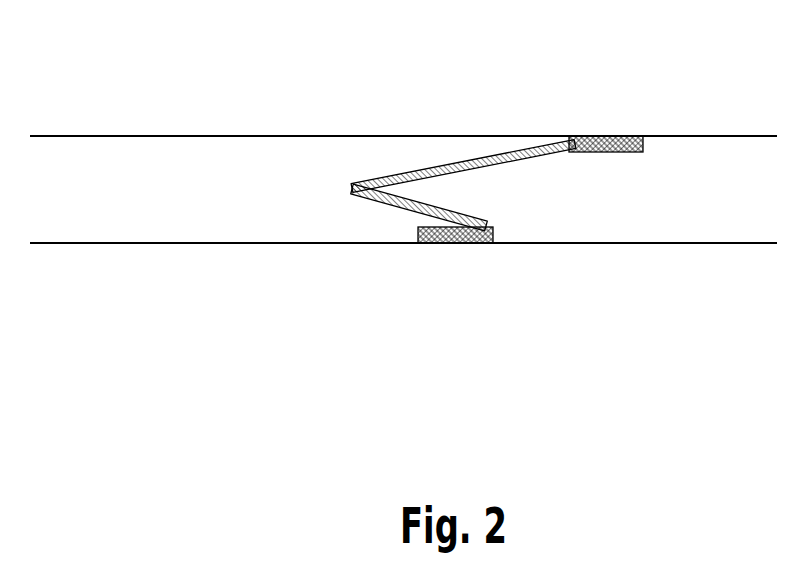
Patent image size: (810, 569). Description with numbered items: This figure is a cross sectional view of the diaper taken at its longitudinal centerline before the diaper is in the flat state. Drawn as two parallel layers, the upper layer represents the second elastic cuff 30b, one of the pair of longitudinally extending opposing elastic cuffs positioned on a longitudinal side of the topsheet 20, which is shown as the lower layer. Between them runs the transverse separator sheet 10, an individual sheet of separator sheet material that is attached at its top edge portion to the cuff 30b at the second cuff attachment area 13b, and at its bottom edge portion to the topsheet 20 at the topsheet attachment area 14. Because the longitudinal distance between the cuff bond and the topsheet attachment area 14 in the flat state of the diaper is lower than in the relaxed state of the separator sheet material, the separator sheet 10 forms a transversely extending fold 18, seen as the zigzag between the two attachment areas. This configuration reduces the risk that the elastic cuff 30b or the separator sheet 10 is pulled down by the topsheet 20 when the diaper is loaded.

The transverse separator sheet 10 is at (478, 136).
The second elastic cuff 30b is at (168, 136).
The topsheet 20 is at (668, 243).
The second cuff attachment area 13b is at (605, 136).
The topsheet attachment area 14 is at (451, 243).
The transversely extending fold 18 is at (348, 188).